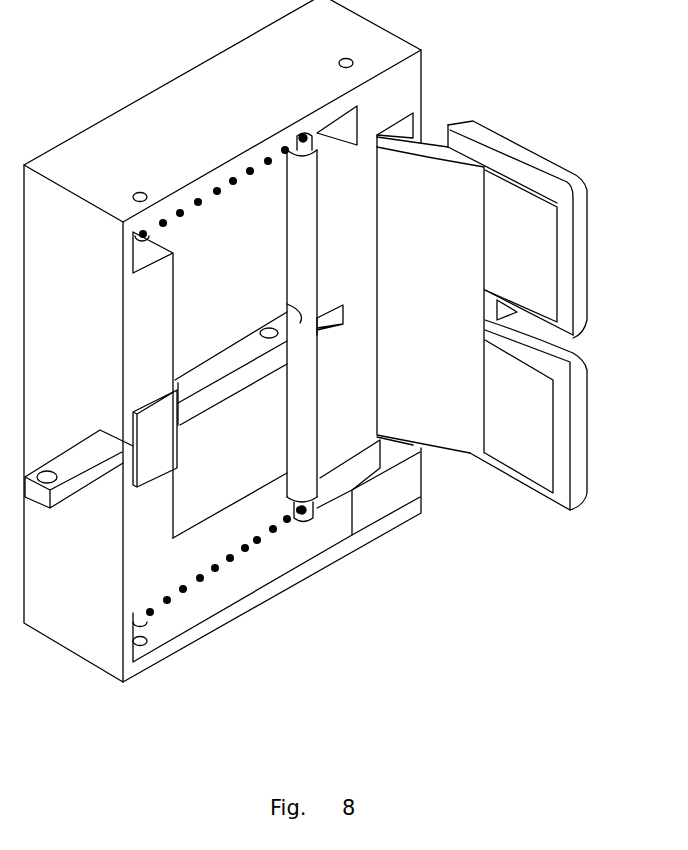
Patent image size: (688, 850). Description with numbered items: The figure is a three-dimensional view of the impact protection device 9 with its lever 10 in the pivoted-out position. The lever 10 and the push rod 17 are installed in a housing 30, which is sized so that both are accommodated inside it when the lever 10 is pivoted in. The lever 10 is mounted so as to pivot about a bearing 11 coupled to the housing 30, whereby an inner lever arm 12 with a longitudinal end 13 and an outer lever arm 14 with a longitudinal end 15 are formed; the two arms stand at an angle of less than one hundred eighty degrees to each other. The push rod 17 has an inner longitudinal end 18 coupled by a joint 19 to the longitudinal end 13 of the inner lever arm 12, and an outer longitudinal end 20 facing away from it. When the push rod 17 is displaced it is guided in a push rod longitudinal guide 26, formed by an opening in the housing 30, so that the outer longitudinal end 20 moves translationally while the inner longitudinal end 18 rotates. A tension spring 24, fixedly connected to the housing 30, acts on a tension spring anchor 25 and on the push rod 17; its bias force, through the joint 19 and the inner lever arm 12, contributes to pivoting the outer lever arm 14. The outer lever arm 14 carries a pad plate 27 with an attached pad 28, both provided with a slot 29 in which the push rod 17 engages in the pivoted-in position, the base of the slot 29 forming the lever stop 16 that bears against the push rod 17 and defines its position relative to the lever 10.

The impact protection device 9 is at (135, 68).
The lever 10 is at (465, 475).
The bearing 11 is at (339, 62).
The inner lever arm 12 is at (351, 214).
The longitudinal end 13 is at (287, 272).
The outer lever arm 14 is at (487, 217).
The longitudinal end 15 is at (563, 500).
The lever stop 16 is at (497, 327).
The push rod 17 is at (208, 356).
The inner longitudinal end 18 is at (283, 347).
The joint 19 is at (298, 306).
The outer longitudinal end 20 is at (40, 510).
The tension spring 24 is at (198, 212).
The tension spring anchor 25 is at (140, 230).
The push rod longitudinal guide 26 is at (112, 438).
The pad plate 27 is at (540, 482).
The pad 28 is at (588, 185).
The slot 29 is at (577, 340).
The housing 30 is at (200, 63).